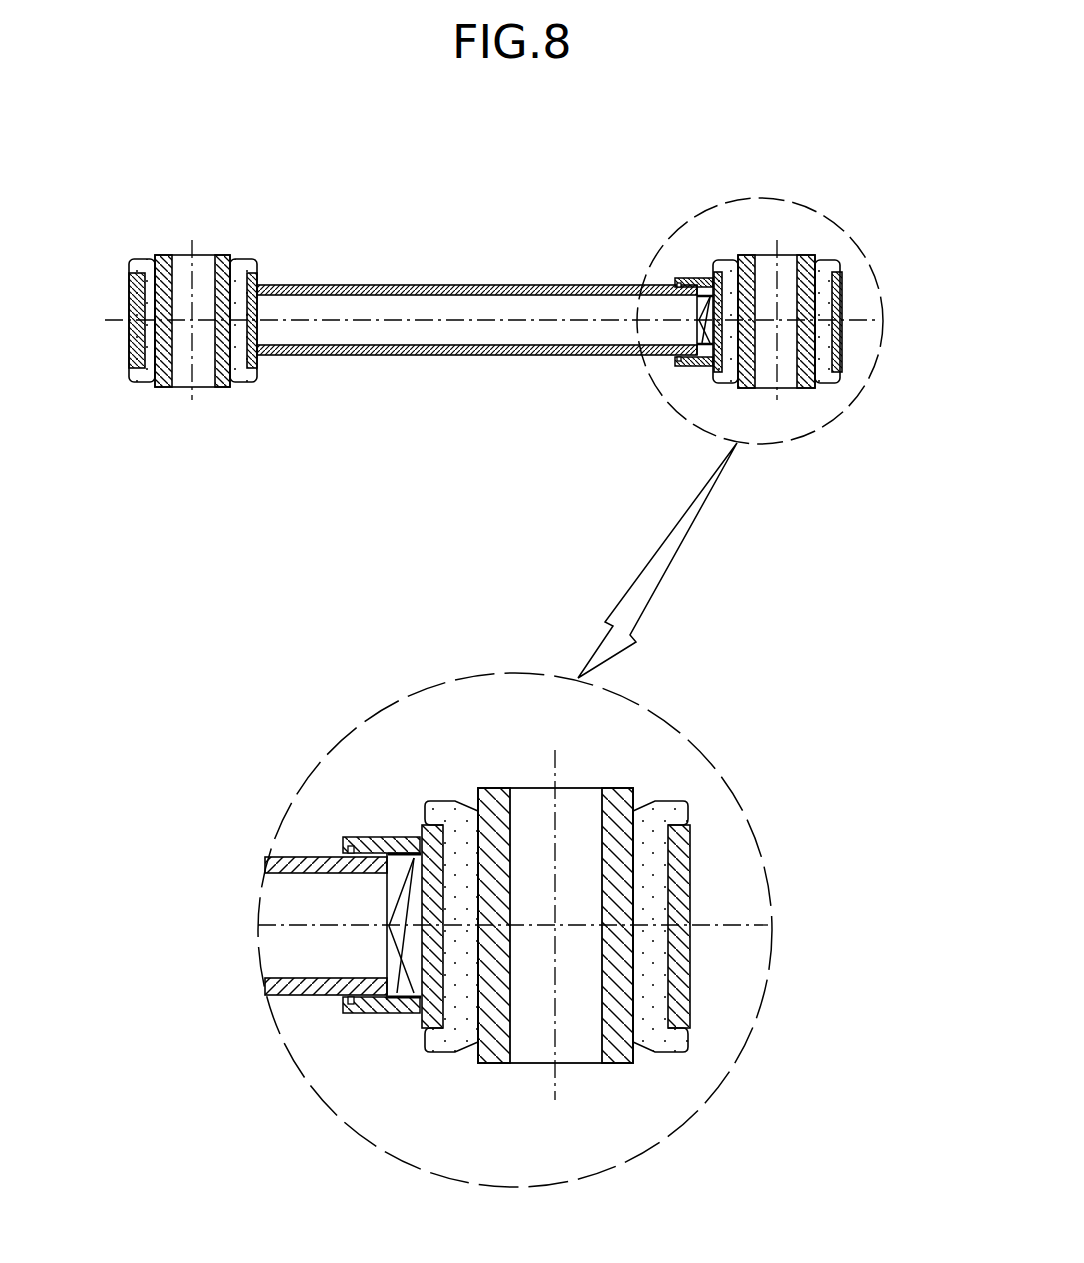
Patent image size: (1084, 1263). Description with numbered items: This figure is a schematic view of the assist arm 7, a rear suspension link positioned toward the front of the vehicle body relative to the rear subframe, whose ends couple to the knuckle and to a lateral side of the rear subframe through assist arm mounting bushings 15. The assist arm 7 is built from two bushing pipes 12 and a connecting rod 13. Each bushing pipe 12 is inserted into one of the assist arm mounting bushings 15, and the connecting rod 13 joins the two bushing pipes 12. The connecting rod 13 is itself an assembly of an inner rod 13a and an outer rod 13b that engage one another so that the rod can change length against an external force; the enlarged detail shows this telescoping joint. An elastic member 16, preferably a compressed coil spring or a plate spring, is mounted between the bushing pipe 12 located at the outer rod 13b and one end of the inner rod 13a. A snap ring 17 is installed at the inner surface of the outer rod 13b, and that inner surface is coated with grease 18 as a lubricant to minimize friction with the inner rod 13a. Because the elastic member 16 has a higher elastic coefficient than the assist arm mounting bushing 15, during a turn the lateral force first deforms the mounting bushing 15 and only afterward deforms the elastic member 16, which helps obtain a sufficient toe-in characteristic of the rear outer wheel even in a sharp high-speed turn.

The assist arm 7 is at (470, 245).
The bushing pipe 12 is at (128, 293).
The connecting rod 13 is at (648, 170).
The inner rod 13a is at (566, 287).
The outer rod 13b is at (682, 281).
The assist arm mounting bushing 15 is at (141, 252).
The elastic member 16 is at (698, 343).
The snap ring 17 is at (345, 837).
The grease 18 is at (414, 826).